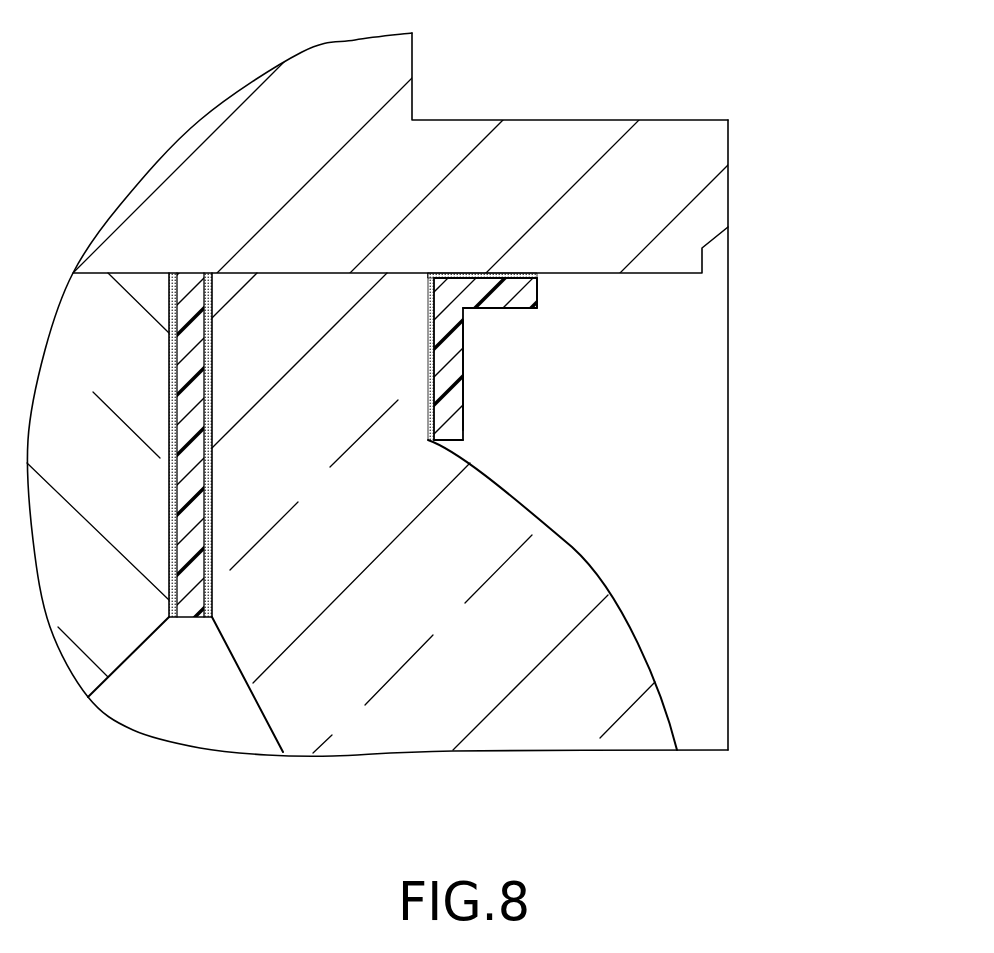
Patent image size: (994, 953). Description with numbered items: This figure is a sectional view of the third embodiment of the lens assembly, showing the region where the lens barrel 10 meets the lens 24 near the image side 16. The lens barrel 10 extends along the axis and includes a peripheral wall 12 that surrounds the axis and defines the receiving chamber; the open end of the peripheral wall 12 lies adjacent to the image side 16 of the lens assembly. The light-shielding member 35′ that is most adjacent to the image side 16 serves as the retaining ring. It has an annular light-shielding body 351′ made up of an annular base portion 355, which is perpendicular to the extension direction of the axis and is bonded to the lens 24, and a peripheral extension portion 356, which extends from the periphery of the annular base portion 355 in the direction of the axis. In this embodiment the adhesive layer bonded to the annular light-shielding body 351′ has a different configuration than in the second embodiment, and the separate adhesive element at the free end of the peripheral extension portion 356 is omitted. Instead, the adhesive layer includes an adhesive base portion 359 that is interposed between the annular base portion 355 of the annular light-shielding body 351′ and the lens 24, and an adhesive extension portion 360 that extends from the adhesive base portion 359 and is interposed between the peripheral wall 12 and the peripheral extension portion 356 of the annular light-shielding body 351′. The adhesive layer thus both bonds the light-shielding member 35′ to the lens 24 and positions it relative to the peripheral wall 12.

The lens barrel 10 is at (588, 115).
The peripheral wall 12 is at (660, 135).
The image side 16 is at (742, 559).
The lens 24 is at (548, 715).
The adhesive extension portion 360 is at (510, 275).
The light-shielding member 35′ is at (570, 368).
The annular light-shielding body 351′ is at (463, 337).
The peripheral extension portion 356 is at (503, 293).
The annular base portion 355 is at (457, 397).
The adhesive base portion 359 is at (435, 425).